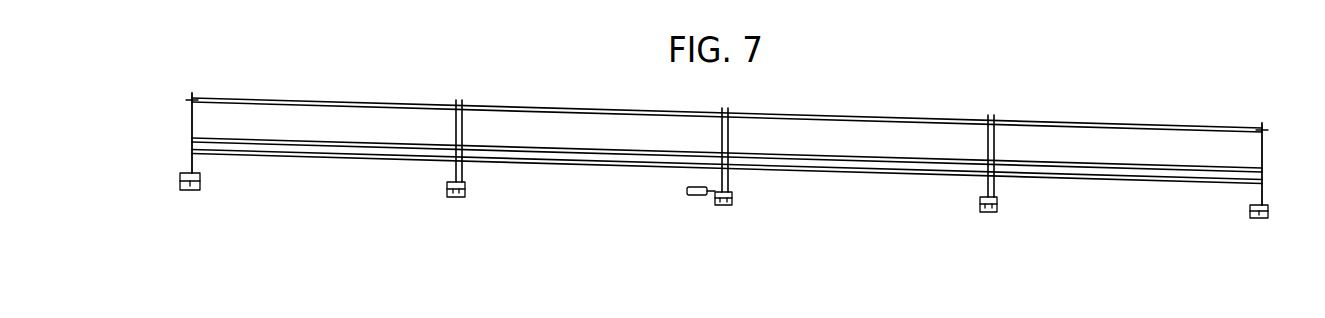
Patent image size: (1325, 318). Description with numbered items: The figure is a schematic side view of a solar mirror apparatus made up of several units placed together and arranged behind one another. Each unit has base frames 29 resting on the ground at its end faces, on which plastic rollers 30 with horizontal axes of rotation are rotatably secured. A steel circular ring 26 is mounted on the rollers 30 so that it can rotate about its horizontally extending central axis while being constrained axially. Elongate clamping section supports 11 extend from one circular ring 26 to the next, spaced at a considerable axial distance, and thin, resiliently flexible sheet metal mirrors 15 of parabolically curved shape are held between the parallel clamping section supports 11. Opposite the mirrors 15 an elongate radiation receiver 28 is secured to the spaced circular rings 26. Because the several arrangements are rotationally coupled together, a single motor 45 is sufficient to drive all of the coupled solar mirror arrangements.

The clamping section support 11 is at (305, 142).
The sheet metal mirror 15 is at (318, 151).
The circular ring 26 is at (190, 121).
The radiation receiver 28 is at (333, 103).
The base frame 29 is at (190, 191).
The plastic roller 30 is at (201, 173).
The motor 45 is at (694, 196).